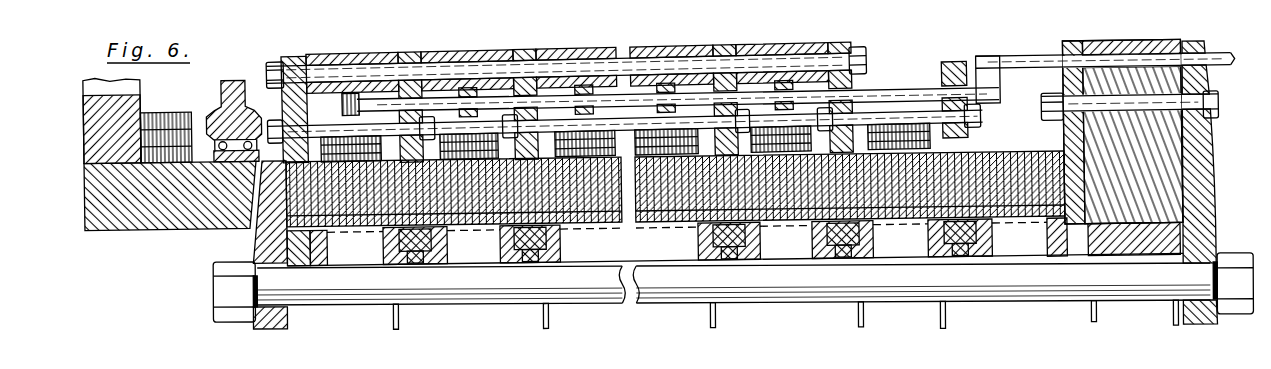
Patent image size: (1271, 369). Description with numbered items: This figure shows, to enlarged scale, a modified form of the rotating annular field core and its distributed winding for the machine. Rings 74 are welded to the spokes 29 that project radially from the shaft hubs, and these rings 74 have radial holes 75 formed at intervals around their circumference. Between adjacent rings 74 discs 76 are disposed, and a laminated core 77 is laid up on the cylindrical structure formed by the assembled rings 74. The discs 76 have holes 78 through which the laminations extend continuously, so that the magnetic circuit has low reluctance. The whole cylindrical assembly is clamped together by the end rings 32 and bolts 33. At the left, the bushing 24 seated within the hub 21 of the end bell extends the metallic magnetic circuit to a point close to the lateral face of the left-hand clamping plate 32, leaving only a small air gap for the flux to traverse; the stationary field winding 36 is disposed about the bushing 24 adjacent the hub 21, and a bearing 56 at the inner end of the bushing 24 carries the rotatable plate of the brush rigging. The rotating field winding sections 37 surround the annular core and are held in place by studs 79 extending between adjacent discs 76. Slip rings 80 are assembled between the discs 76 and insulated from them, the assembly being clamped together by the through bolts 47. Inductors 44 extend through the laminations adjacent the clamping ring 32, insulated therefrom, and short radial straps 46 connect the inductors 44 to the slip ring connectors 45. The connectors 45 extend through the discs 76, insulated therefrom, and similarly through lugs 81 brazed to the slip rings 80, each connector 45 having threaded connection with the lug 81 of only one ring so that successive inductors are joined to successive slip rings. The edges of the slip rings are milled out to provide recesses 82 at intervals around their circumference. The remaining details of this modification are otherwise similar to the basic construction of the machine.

The hub 21 is at (118, 126).
The bushing 24 is at (176, 203).
The stationary field winding 36 is at (178, 108).
The bearing 56 is at (228, 125).
The end ring 32 is at (265, 239).
The slip ring 80 is at (466, 48).
The recess 82 is at (548, 53).
The lug 81 is at (344, 86).
The through bolt 47 is at (738, 52).
The slip ring connector 45 is at (897, 100).
The stud 79 is at (583, 123).
The rotating field winding 37 is at (652, 132).
The inductor 44 is at (1042, 52).
The radial strap 46 is at (1000, 85).
The laminated core 77 is at (1065, 136).
The hole 78 is at (961, 147).
The spoke 29 is at (545, 317).
The disc 76 is at (498, 244).
The bolt 33 is at (790, 291).
The radial hole 75 is at (338, 266).
The ring 74 is at (398, 271).